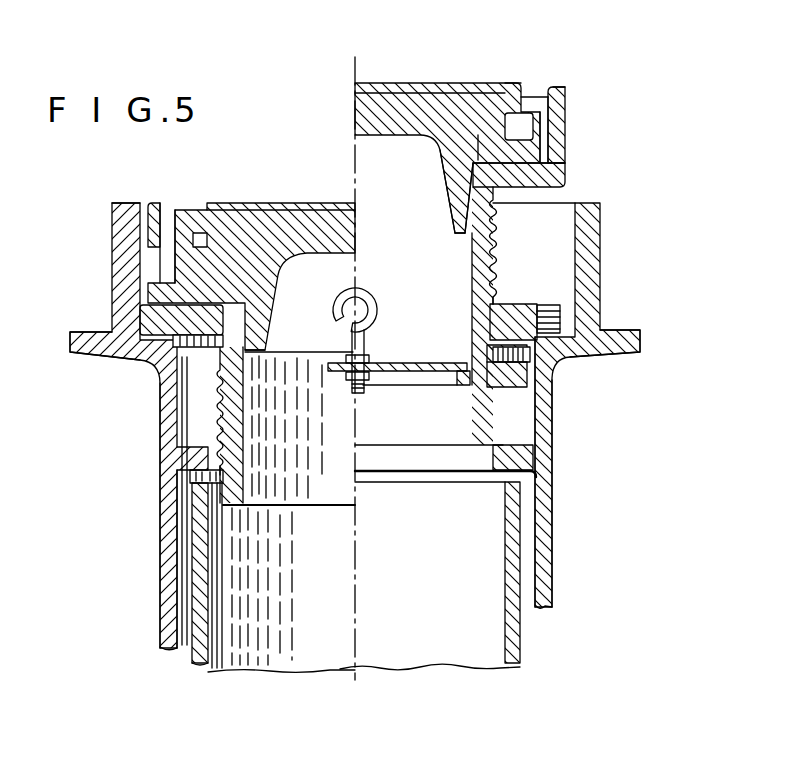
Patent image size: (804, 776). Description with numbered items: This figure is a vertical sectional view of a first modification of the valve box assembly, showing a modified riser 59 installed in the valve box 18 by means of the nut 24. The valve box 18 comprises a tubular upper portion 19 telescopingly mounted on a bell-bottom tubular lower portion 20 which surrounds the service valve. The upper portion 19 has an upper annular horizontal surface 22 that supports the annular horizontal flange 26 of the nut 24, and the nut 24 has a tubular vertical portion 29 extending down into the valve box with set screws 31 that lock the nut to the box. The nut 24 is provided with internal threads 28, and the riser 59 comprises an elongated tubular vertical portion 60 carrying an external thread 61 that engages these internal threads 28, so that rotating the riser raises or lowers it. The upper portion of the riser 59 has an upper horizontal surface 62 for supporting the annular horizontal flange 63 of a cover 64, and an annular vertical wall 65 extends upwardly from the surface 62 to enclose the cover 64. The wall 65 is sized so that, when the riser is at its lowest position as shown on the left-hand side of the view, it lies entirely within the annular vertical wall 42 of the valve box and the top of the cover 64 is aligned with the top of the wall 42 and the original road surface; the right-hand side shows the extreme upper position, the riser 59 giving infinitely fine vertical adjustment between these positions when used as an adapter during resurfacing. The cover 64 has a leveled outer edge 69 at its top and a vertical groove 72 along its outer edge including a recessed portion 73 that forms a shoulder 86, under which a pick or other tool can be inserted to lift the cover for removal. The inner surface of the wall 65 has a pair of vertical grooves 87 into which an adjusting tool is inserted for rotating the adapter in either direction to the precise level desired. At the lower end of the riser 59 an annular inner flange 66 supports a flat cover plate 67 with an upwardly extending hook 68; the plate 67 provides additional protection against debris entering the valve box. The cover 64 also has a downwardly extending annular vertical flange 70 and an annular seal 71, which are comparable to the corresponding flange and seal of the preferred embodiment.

The valve box 18 is at (610, 428).
The tubular upper portion 19 is at (548, 500).
The bell-bottom tubular lower portion 20 is at (513, 637).
The upper annular horizontal surface 22 is at (567, 337).
The nut 24 is at (514, 308).
The annular horizontal flange 26 is at (560, 315).
The internal threads 28 is at (486, 383).
The tubular vertical portion 29 is at (512, 376).
The set screws 31 is at (530, 358).
The annular vertical wall 42 is at (594, 277).
The modified riser 59 is at (585, 83).
The elongated tubular vertical portion 60 is at (487, 233).
The external thread 61 is at (492, 258).
The upper horizontal surface 62 is at (556, 143).
The annular horizontal flange 63 is at (487, 138).
The cover 64 is at (425, 100).
The annular vertical wall 65 is at (552, 113).
The annular inner flange 66 is at (466, 363).
The flat cover plate 67 is at (401, 363).
The hook 68 is at (373, 293).
The leveled outer edge 69 is at (517, 87).
The annular vertical flange 70 is at (452, 203).
The annular seal 71 is at (461, 237).
The vertical groove 72 is at (548, 92).
The recessed portion 73 is at (519, 126).
The shoulder 86 is at (545, 120).
The vertical grooves 87 is at (570, 92).